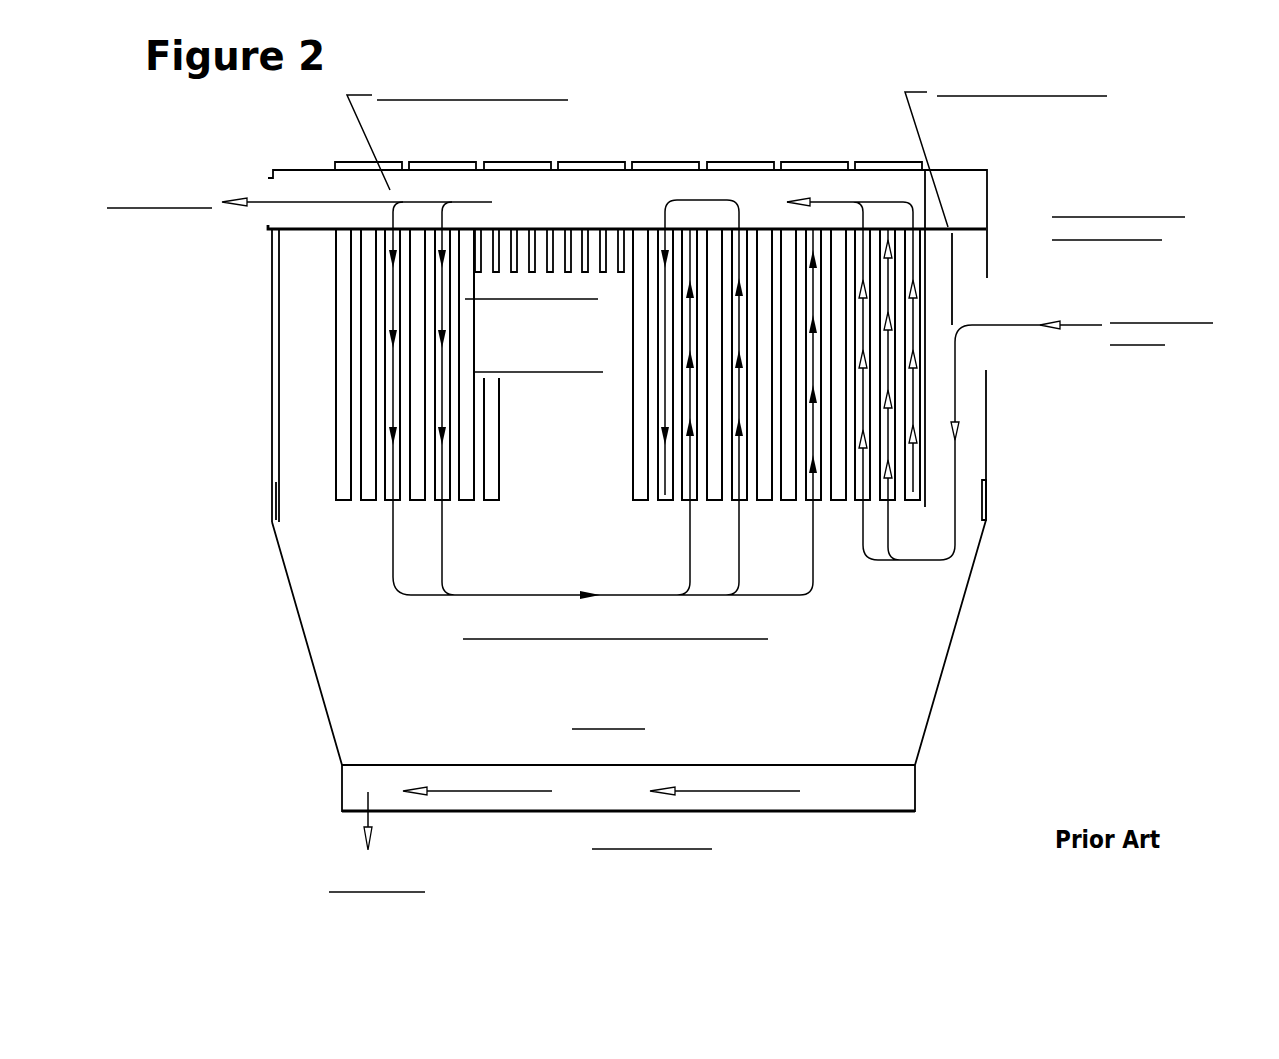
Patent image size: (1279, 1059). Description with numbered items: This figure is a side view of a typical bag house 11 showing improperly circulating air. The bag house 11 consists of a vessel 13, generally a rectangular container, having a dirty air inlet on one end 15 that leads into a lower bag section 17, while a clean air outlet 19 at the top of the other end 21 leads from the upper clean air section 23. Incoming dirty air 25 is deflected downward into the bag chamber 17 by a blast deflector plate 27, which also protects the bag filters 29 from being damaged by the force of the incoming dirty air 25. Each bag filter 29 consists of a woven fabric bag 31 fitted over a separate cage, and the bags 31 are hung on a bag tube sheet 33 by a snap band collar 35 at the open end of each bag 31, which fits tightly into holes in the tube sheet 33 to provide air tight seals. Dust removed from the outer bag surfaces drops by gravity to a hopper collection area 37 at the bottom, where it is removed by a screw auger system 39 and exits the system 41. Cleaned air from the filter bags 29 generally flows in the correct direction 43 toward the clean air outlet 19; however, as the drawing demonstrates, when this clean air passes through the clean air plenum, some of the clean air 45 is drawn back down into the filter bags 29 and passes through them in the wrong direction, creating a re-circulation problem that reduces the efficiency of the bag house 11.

The bag house 11 is at (1080, 645).
The vessel 13 is at (985, 337).
The one end 15 is at (986, 413).
The bag section 17 is at (605, 287).
The clean air outlet 19 is at (265, 213).
The other end 21 is at (272, 398).
The upper clean air section 23 is at (553, 190).
The incoming dirty air 25 is at (1057, 325).
The blast deflector plate 27 is at (926, 307).
The bag filter 29 is at (330, 521).
The fabric bag 31 is at (370, 495).
The bag tube sheet 33 is at (688, 153).
The snap band collar 35 is at (517, 229).
The hopper collection area 37 is at (900, 725).
The screw auger system 39 is at (792, 810).
The system exit 41 is at (362, 832).
The correct direction 43 is at (923, 560).
The re-circulated clean air 45 is at (412, 595).